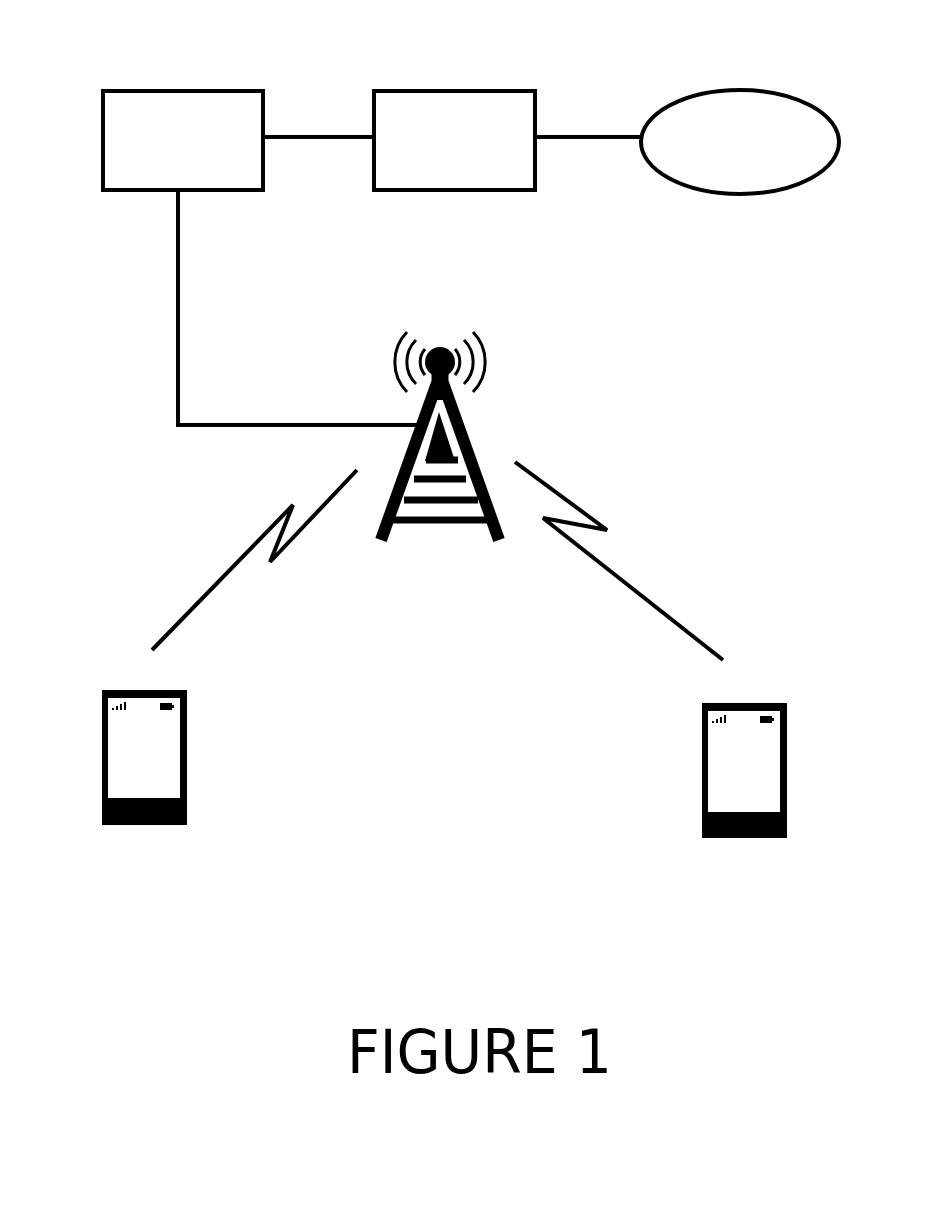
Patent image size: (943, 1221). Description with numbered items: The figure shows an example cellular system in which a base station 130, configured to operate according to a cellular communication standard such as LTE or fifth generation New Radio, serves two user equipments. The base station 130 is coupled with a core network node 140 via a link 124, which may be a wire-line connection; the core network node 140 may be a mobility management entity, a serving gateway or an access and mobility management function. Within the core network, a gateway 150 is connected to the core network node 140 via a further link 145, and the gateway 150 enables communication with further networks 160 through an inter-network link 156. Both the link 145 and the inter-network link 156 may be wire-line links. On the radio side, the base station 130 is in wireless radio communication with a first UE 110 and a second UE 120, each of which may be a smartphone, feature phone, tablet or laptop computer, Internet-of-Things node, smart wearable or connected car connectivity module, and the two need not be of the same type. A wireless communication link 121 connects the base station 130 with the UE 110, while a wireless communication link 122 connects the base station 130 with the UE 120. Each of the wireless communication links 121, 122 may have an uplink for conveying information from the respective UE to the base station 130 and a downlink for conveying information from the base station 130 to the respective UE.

The user equipment 110 is at (140, 826).
The user equipment 120 is at (742, 839).
The wireless communication link 121 is at (225, 573).
The wireless communication link 122 is at (652, 602).
The link 124 is at (177, 358).
The base station 130 is at (453, 523).
The core network node 140 is at (208, 163).
The link 145 is at (319, 137).
The gateway 150 is at (486, 163).
The inter-network link 156 is at (590, 137).
The further networks 160 is at (769, 163).